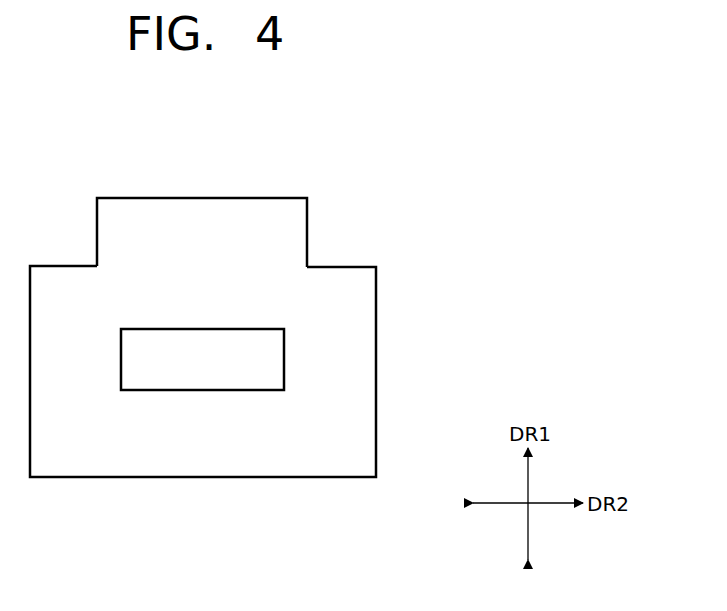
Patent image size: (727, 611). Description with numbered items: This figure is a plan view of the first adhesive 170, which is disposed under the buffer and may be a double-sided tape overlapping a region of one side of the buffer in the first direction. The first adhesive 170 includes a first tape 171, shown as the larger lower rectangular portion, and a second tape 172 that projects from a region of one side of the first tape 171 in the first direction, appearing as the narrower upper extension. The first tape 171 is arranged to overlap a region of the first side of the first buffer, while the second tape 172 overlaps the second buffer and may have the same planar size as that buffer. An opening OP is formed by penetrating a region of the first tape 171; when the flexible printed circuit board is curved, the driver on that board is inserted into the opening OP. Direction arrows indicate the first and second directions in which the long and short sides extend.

The first adhesive 170 is at (252, 287).
The first tape 171 is at (362, 421).
The second tape 172 is at (292, 228).
The opening OP is at (256, 363).